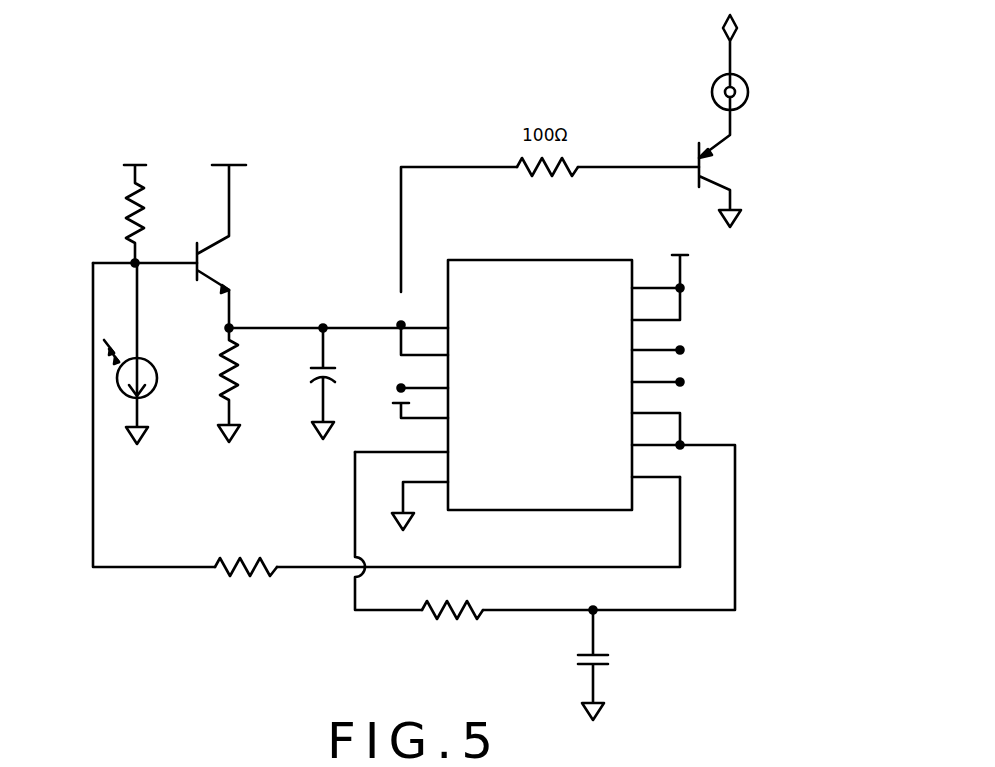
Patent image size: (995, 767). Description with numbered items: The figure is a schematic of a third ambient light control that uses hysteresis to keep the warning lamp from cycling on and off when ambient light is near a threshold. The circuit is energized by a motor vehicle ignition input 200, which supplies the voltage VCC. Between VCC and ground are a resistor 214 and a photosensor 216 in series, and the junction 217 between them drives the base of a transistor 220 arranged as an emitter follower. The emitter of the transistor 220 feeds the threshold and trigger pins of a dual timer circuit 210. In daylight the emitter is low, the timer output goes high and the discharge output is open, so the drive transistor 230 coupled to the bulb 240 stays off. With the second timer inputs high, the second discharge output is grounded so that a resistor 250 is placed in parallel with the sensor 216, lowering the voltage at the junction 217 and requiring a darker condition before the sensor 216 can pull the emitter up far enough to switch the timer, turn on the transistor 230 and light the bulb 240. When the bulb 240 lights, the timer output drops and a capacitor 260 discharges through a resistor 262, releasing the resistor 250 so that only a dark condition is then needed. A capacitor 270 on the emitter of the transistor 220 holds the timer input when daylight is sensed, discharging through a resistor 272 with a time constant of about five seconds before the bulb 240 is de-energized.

The ignition input 200 is at (731, 58).
The 556 timer circuit 210 is at (538, 268).
The resistor 214 is at (128, 198).
The photosensor 216 is at (148, 360).
The junction 217 is at (137, 261).
The transistor 220 is at (219, 240).
The drive transistor 230 is at (703, 165).
The bulb 240 is at (746, 101).
The resistor 250 is at (240, 578).
The capacitor 260 is at (600, 667).
The resistor 262 is at (428, 613).
The capacitor 270 is at (320, 382).
The resistor 272 is at (225, 403).